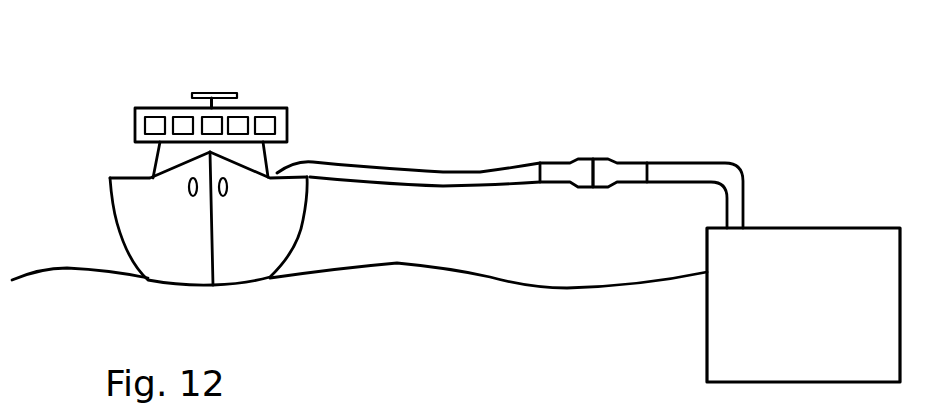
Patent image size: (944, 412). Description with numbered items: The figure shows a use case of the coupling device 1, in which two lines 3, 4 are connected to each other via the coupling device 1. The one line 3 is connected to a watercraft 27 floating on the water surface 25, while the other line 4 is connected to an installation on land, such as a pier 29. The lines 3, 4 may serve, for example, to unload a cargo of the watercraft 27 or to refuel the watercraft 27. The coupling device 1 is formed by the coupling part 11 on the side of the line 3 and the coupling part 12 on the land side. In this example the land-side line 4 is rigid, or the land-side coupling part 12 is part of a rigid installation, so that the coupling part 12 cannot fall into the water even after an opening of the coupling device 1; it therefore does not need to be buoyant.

The coupling device 1 is at (510, 122).
The line 3 is at (437, 172).
The line 4 is at (675, 163).
The coupling part 11 is at (560, 163).
The coupling part 12 is at (622, 159).
The water surface 25 is at (83, 268).
The watercraft 27 is at (275, 108).
The pier 29 is at (838, 227).